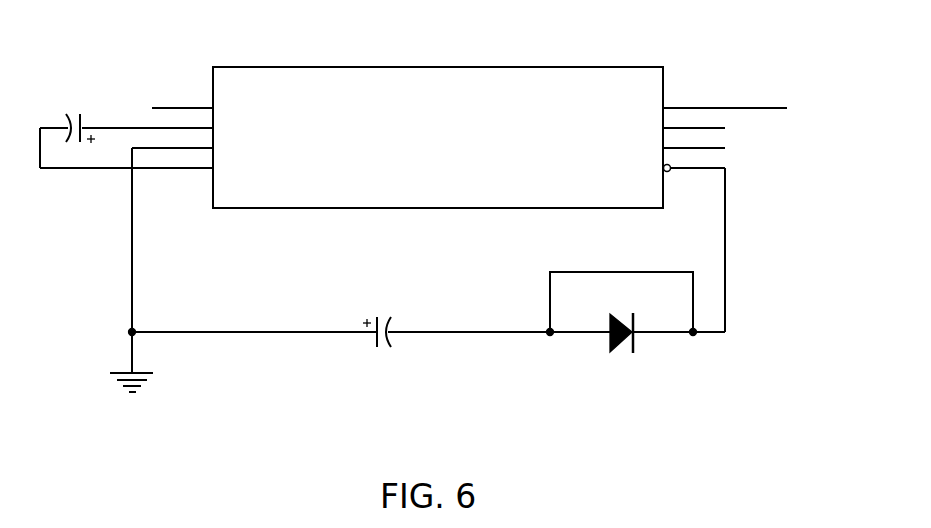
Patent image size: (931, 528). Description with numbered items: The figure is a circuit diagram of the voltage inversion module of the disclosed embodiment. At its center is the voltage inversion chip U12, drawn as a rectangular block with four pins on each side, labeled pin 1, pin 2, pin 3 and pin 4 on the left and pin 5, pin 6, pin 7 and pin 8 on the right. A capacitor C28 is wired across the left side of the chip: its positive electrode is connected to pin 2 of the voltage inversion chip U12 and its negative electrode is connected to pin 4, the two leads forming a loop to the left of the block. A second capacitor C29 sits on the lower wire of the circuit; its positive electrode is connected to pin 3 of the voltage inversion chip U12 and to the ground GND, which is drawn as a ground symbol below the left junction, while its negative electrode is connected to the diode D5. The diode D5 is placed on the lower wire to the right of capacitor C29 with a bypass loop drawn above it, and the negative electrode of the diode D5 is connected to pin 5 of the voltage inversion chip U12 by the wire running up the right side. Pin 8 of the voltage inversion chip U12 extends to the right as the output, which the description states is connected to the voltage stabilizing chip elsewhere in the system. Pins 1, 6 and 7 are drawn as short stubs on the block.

The voltage inversion chip U12 is at (438, 140).
The capacitor C28 is at (76, 119).
The capacitor C29 is at (375, 321).
The diode D5 is at (621, 322).
The ground GND is at (131, 392).
The pin 1 is at (182, 102).
The pin 2 is at (147, 122).
The pin 3 is at (172, 142).
The pin 4 is at (126, 162).
The pin 5 is at (695, 164).
The pin 6 is at (694, 142).
The pin 7 is at (694, 122).
The pin 8 is at (725, 102).